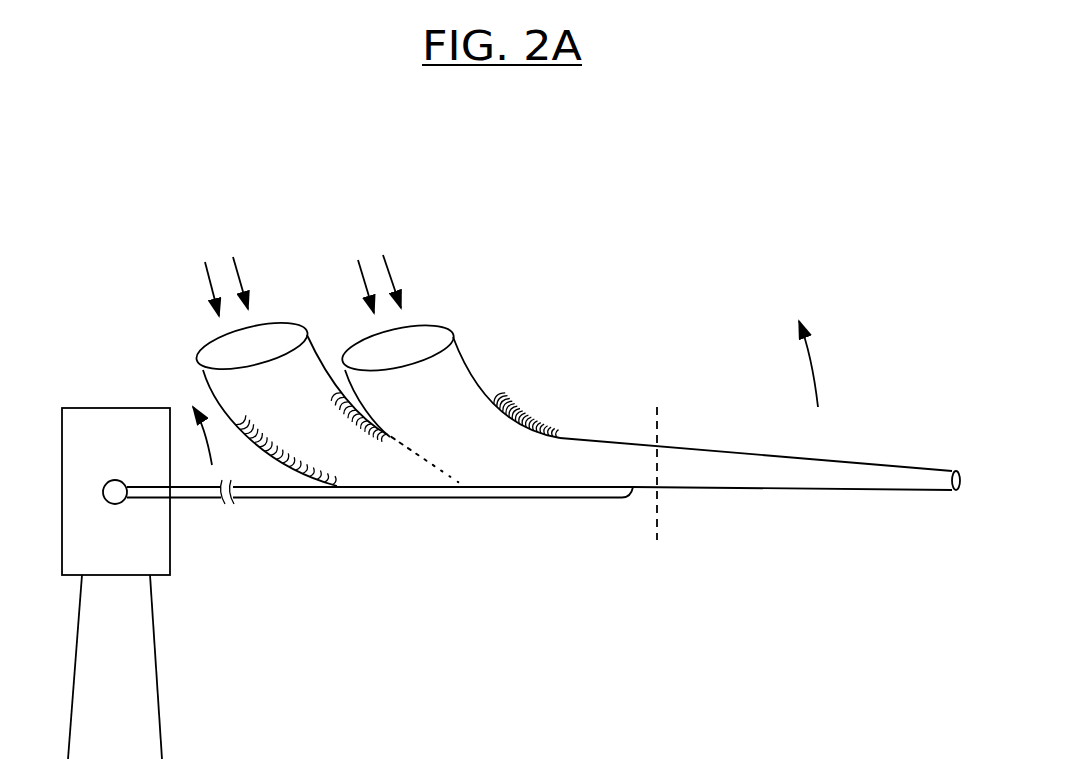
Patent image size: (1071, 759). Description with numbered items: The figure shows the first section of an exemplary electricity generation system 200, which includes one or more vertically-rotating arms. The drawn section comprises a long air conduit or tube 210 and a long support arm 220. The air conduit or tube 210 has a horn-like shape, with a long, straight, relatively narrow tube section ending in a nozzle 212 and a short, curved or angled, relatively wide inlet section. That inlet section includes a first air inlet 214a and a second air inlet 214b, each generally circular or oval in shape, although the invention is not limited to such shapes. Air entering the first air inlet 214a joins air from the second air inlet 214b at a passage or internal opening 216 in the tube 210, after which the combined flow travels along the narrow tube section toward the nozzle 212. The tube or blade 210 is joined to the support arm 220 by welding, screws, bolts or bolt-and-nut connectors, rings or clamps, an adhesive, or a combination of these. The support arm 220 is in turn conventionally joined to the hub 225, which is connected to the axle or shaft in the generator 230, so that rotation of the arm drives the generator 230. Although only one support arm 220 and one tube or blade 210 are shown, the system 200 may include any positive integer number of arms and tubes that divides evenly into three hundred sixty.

The electricity generation system 200 is at (524, 164).
The air conduit or tube 210 is at (782, 490).
The nozzle 212 is at (958, 467).
The first air inlet 214a is at (217, 352).
The second air inlet 214b is at (430, 333).
The passage or internal opening 216 is at (433, 472).
The support arm 220 is at (487, 500).
The hub 225 is at (117, 479).
The generator 230 is at (173, 525).